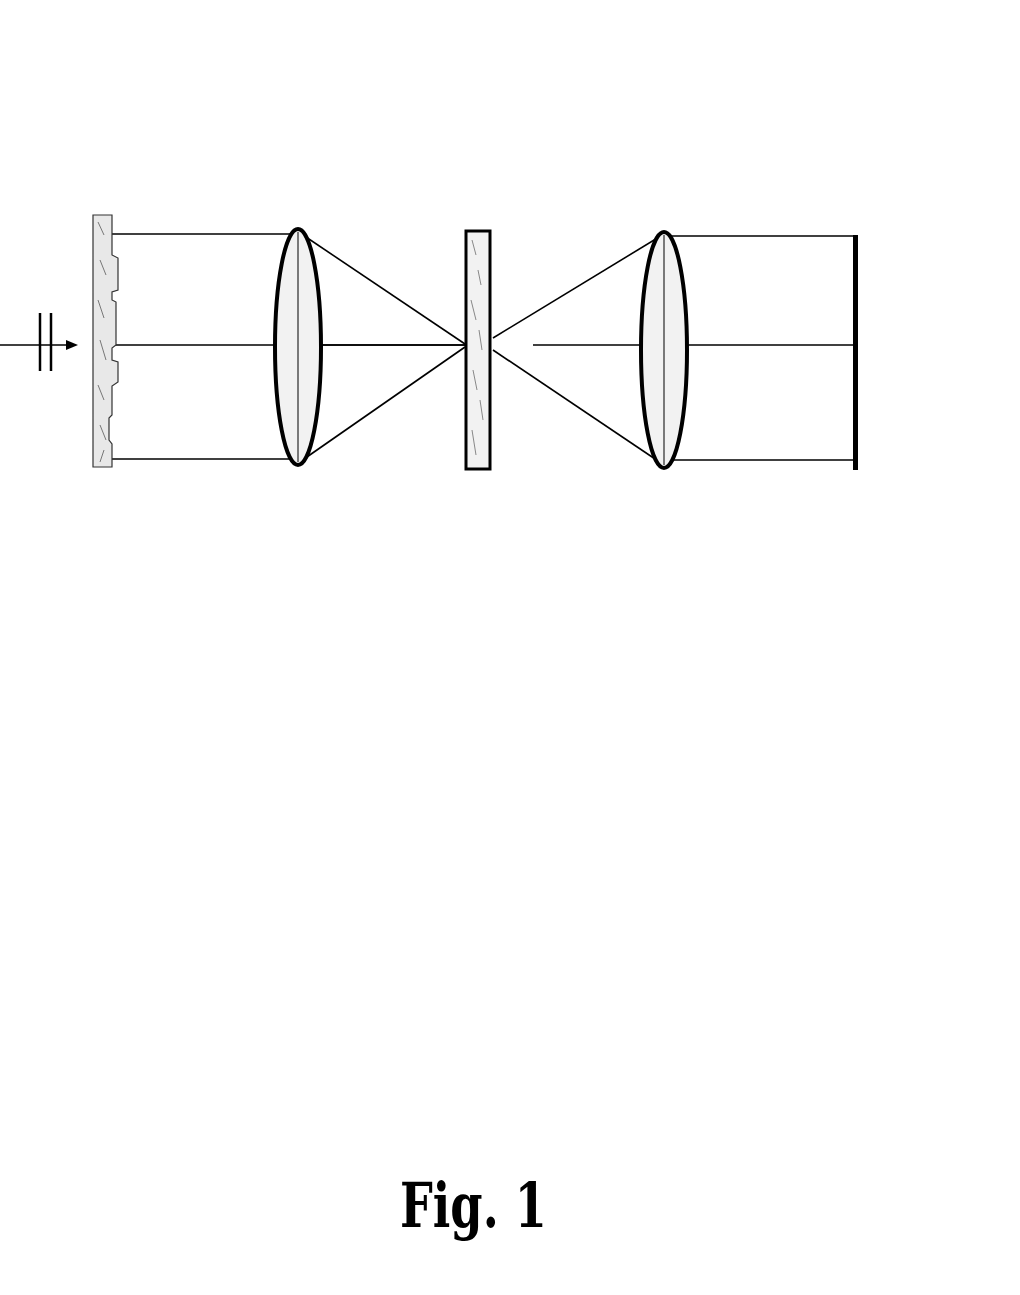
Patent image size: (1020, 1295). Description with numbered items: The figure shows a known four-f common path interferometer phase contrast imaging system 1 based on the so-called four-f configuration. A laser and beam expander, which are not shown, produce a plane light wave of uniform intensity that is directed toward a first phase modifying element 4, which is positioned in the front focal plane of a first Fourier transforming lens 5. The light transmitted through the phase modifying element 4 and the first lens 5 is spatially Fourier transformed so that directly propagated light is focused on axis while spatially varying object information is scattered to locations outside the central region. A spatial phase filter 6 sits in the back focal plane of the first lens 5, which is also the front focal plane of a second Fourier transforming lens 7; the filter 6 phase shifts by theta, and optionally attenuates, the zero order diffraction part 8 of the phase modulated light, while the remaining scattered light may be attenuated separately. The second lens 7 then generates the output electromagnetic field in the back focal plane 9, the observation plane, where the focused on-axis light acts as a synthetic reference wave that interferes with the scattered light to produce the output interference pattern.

The 4f CPI phase contrast imaging system 1 is at (489, 133).
The first phase modifying element 4 is at (107, 163).
The first lens L1 5 is at (298, 228).
The spatial phase filter 6 is at (497, 263).
The second lens L2 7 is at (667, 230).
The zero order diffraction part 8 is at (392, 337).
The back focal plane 9 is at (865, 170).